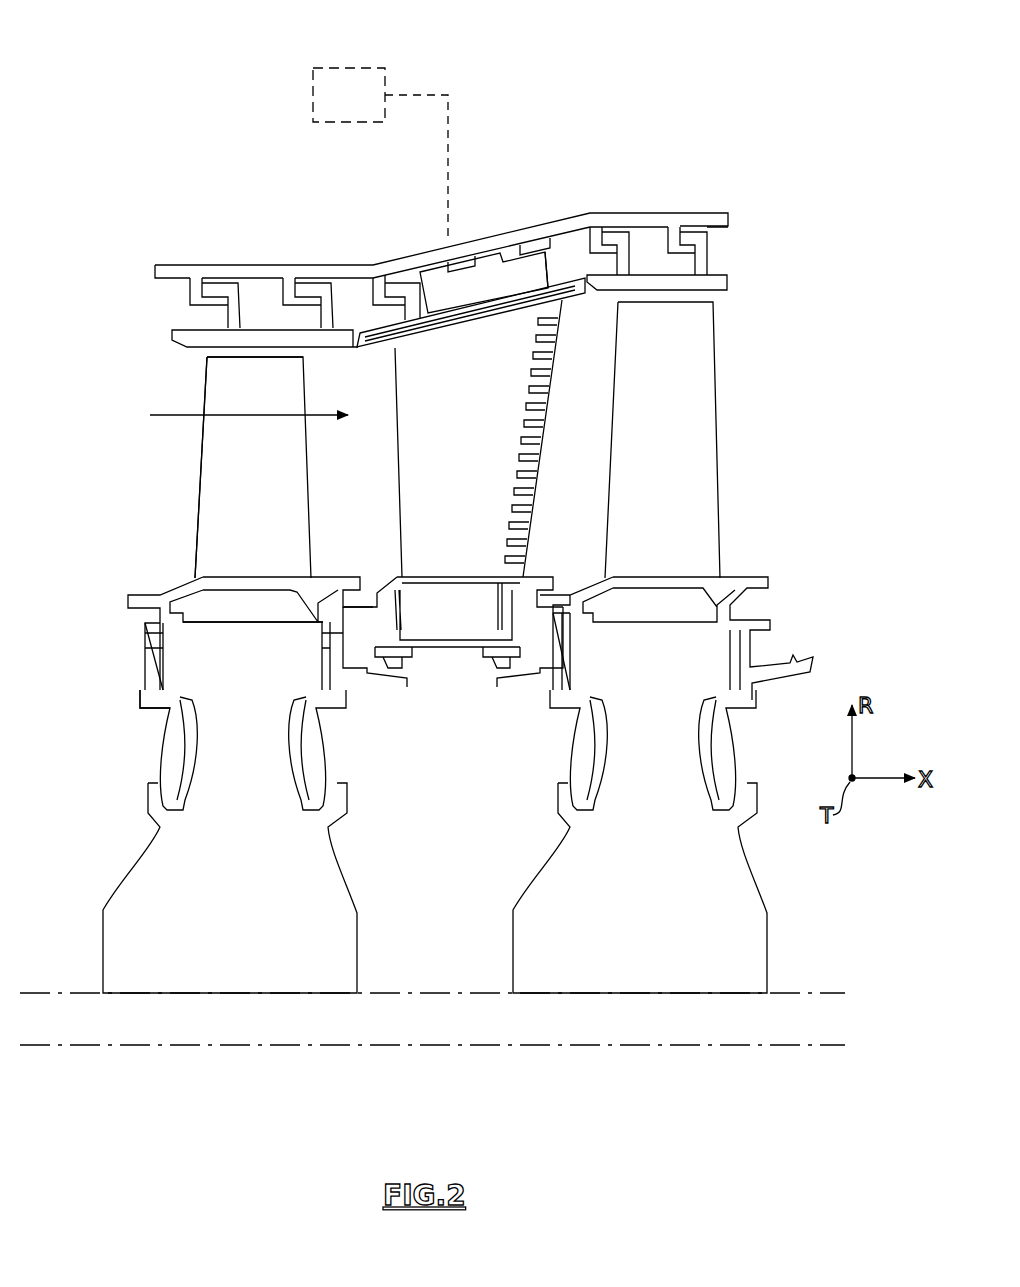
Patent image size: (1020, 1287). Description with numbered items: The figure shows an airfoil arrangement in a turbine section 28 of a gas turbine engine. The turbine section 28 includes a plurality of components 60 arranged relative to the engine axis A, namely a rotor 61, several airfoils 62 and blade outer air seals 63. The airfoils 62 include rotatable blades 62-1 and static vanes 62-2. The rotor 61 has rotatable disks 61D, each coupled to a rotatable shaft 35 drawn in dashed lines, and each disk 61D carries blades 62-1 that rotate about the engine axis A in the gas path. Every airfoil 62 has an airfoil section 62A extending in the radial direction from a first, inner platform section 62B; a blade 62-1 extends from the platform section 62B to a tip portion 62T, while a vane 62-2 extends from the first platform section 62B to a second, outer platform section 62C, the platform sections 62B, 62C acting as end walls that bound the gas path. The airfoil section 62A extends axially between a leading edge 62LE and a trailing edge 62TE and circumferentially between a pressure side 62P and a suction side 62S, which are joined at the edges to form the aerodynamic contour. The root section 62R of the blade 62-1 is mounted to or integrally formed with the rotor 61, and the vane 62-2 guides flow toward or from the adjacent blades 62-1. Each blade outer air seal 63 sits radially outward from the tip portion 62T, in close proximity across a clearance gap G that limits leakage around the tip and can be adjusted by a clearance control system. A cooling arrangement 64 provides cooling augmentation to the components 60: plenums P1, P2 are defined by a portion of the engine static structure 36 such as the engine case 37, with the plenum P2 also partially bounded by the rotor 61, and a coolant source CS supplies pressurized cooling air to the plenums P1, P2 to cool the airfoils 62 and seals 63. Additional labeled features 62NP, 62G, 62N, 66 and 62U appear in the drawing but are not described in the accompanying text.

The turbine section 28 is at (78, 206).
The cooling arrangement 64 is at (272, 92).
The engine static structure 36 is at (428, 270).
The engine case 37 is at (213, 264).
The blade outer air seal (BOAS) 63 is at (170, 336).
The components 60 is at (730, 285).
The airfoil 62 is at (516, 426).
The blade 62-1 is at (312, 464).
The vane 62-2 is at (549, 430).
The tip portion 62T is at (212, 352).
The airfoil section 62A is at (232, 470).
The leading edge 62LE is at (200, 503).
The trailing edge 62TE is at (308, 518).
The neck portion 62NP is at (233, 576).
The gap / groove 62G is at (274, 577).
The first (inner) platform section 62B is at (147, 592).
The neck 62N is at (427, 610).
The neck 66 is at (160, 630).
The undersurface 62U is at (280, 590).
The root section 62R is at (180, 672).
The pressure side 62P is at (264, 624).
The suction side 62S is at (218, 546).
The second (outer) platform section 62C is at (548, 300).
The rotor 61 is at (473, 841).
The rotatable disk 61D is at (332, 917).
The rotatable shaft 35 is at (830, 992).
The engine axis A is at (812, 1045).
The coolant source CS is at (380, 154).
The plenum P1 is at (460, 282).
The plenum P2 is at (453, 787).
The clearance gap G is at (178, 351).